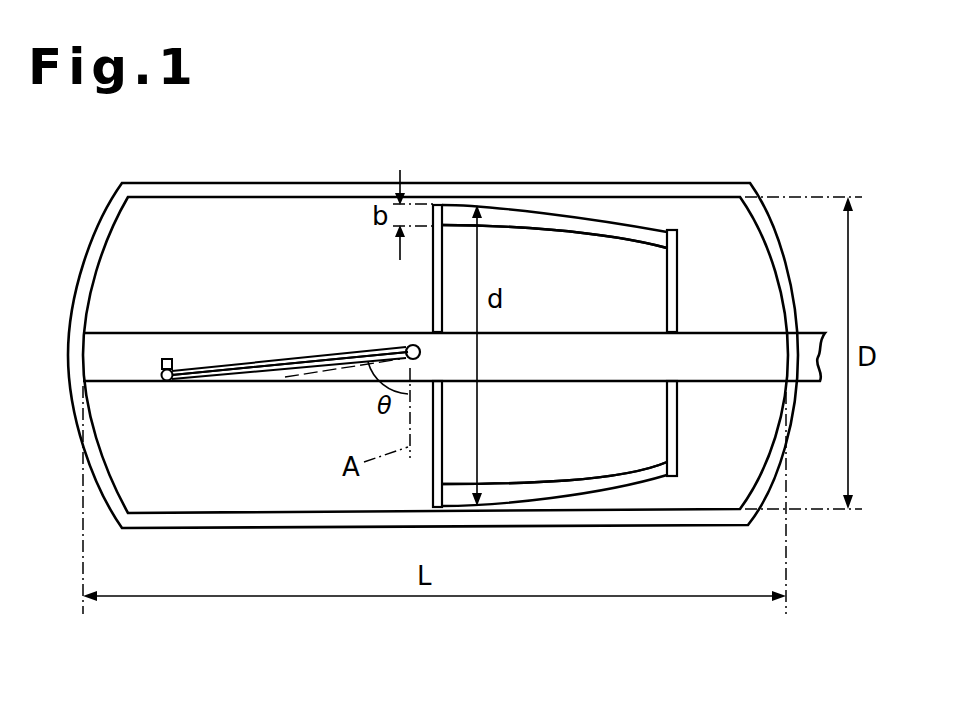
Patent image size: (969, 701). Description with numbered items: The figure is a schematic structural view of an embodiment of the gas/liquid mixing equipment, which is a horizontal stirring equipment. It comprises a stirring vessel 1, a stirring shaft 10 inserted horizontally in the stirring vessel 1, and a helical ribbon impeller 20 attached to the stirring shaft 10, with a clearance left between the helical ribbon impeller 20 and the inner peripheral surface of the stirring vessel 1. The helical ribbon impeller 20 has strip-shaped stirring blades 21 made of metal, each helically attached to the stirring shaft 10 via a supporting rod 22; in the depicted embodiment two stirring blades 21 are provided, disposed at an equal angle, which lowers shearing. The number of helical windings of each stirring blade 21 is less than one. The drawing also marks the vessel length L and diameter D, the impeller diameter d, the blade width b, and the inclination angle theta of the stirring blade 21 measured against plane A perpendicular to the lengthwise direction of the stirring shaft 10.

The stirring vessel 1 is at (246, 183).
The stirring shaft 10 is at (738, 332).
The helical ribbon impeller 20 is at (263, 382).
The stirring blade 21 is at (300, 377).
The supporting rod 22 is at (166, 383).